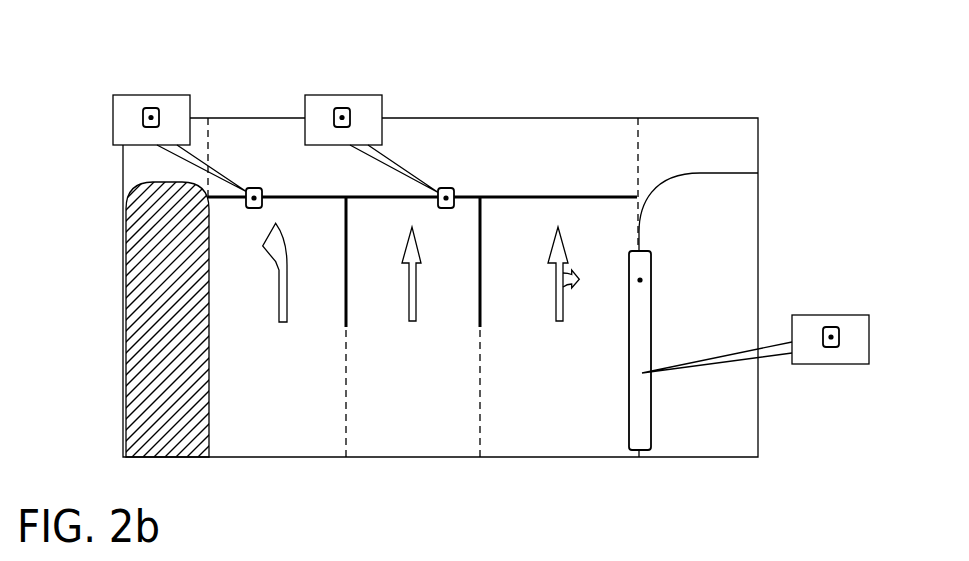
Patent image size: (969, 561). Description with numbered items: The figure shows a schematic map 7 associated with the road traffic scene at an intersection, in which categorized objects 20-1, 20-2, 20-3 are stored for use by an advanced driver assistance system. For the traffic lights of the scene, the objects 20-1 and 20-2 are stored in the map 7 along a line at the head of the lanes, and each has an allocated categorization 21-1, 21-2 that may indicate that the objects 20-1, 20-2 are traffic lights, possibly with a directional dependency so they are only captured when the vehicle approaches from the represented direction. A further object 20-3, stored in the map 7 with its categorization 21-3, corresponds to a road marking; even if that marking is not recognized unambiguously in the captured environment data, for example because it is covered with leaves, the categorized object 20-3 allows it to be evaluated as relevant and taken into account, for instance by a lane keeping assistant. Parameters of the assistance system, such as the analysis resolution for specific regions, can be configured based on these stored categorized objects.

The map 7 is at (98, 64).
The object 20-1 is at (255, 188).
The object 20-2 is at (445, 188).
The object 20-3 is at (640, 280).
The categorization 21-1 is at (152, 107).
The categorization 21-2 is at (341, 107).
The categorization 21-3 is at (832, 327).